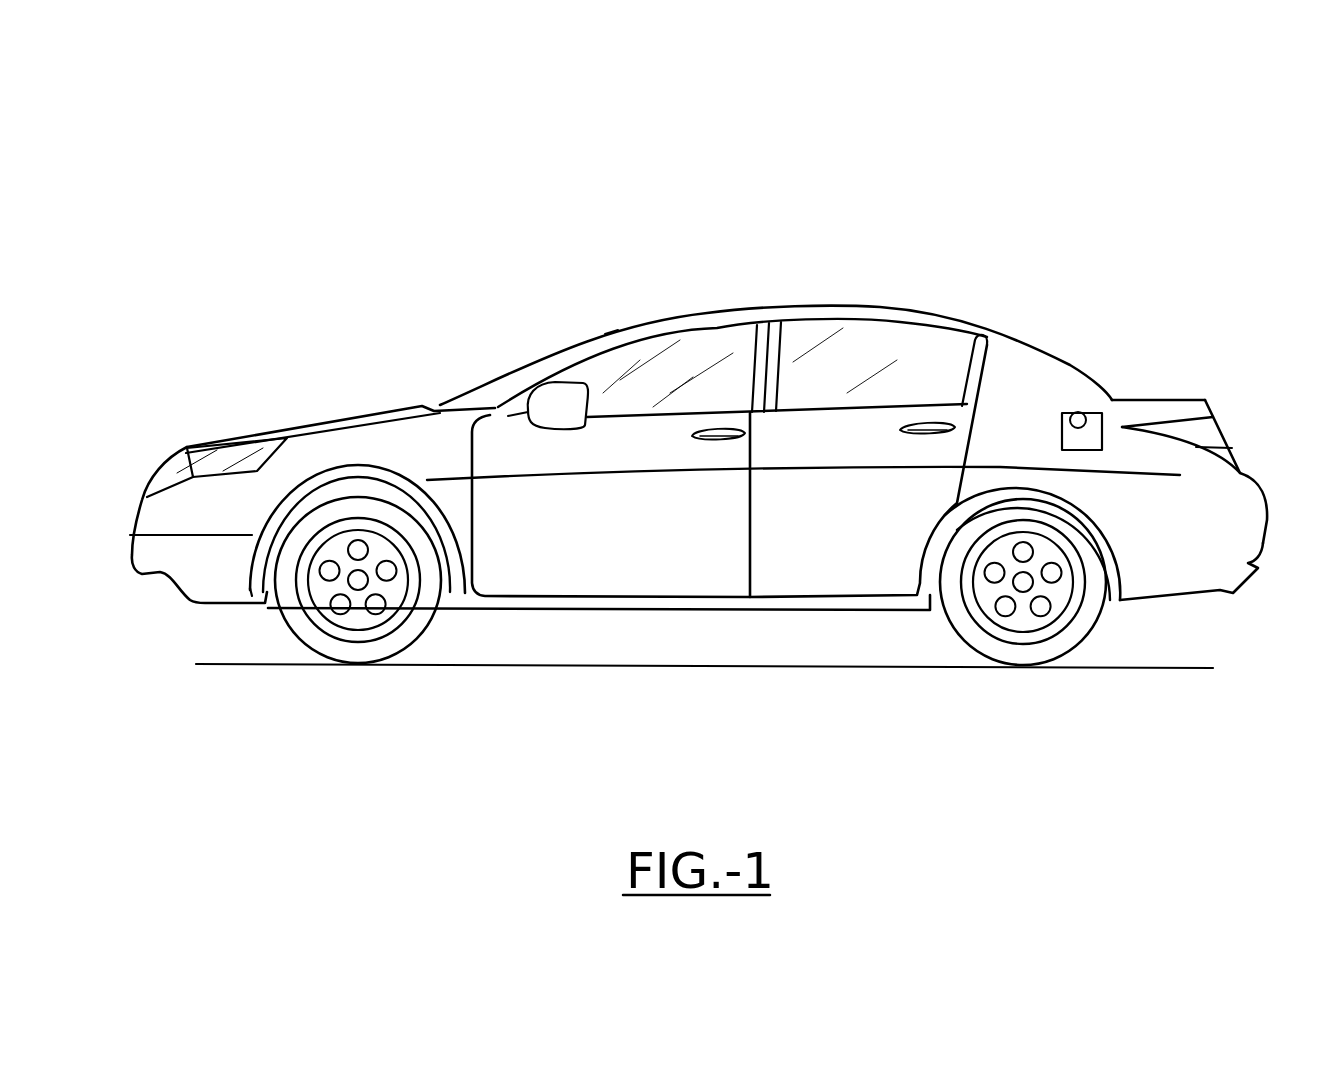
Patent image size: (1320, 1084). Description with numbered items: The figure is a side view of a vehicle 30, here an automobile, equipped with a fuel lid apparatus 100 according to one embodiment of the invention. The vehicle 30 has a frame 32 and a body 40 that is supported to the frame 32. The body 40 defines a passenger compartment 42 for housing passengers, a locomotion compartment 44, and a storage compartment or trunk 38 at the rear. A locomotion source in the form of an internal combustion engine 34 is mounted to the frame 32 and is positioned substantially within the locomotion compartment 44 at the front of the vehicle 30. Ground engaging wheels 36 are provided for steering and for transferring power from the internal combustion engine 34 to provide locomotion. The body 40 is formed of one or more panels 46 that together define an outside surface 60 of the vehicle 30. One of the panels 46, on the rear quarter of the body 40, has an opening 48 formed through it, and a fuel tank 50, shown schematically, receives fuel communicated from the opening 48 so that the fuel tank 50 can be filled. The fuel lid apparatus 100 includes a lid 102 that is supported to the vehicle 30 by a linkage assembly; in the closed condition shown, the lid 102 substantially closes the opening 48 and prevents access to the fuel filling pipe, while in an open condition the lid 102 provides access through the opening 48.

The vehicle 30 is at (967, 232).
The frame 32 is at (689, 628).
The internal combustion engine 34 is at (194, 362).
The ground engaging wheels 36 is at (372, 652).
The trunk 38 is at (1201, 348).
The body 40 is at (490, 332).
The passenger compartment 42 is at (702, 343).
The locomotion compartment 44 is at (292, 350).
The panels 46 is at (1180, 522).
The opening 48 is at (1080, 412).
The fuel tank 50 is at (764, 630).
The outside surface 60 is at (1128, 506).
The fuel lid apparatus 100 is at (1096, 260).
The lid 102 is at (1082, 445).